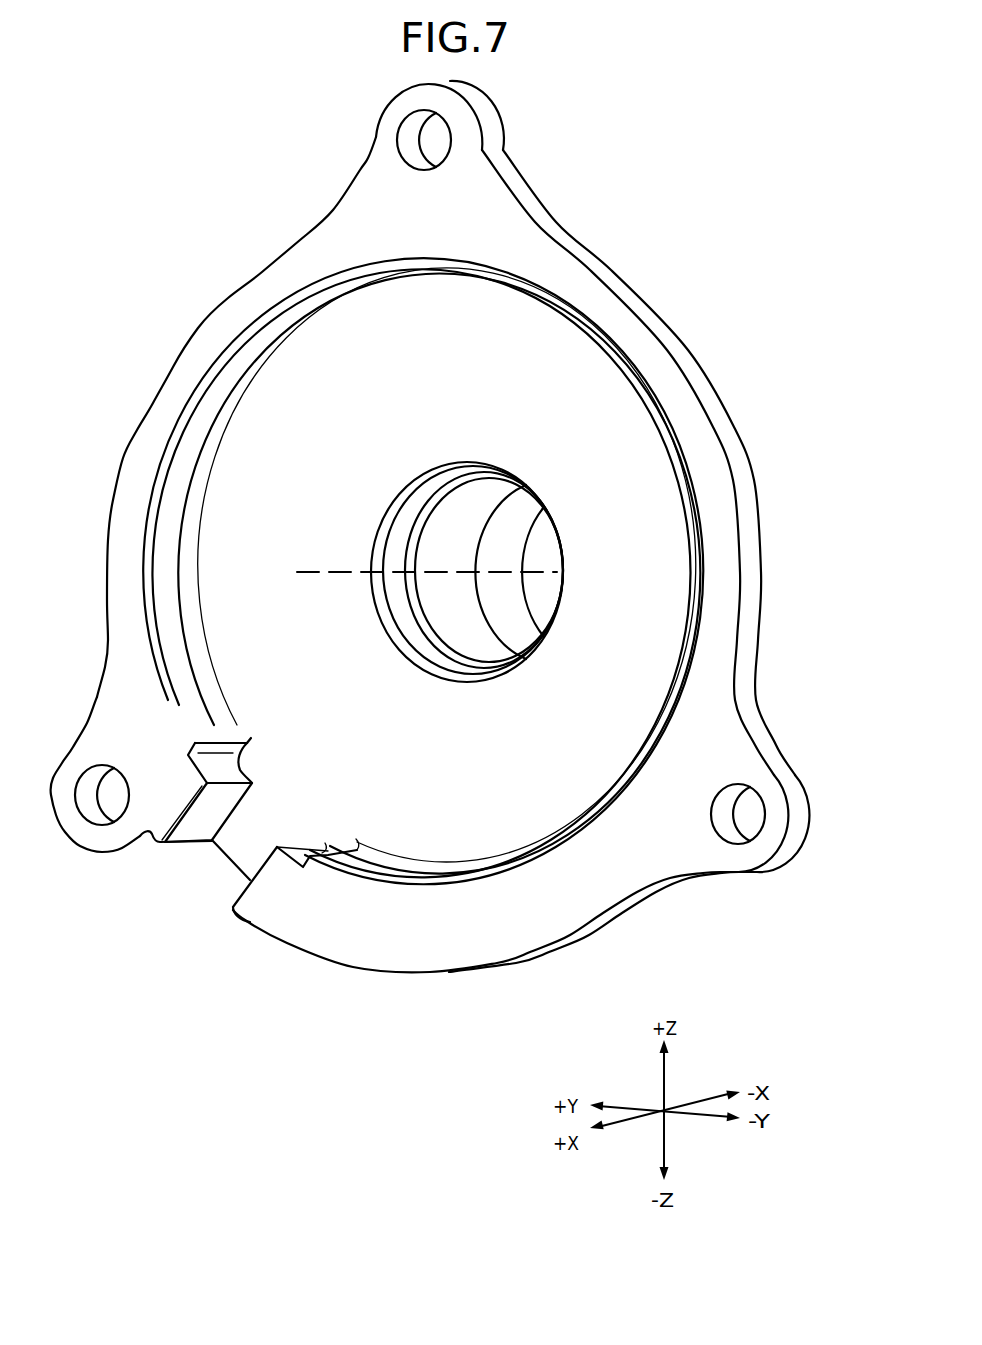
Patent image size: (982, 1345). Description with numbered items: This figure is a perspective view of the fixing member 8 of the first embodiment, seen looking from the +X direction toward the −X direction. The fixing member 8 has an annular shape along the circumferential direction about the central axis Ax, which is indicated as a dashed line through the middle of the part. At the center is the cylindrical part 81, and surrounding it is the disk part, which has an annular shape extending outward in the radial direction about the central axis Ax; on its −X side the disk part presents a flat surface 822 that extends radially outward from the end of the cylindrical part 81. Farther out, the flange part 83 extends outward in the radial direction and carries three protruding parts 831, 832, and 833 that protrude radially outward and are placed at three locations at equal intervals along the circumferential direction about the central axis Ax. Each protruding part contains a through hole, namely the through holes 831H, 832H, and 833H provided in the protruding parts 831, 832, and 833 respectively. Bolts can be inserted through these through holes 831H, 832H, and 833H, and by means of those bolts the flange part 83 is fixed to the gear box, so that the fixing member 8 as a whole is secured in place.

The fixing member 8 is at (737, 274).
The cylindrical part 81 is at (508, 610).
The flat surface 822 is at (307, 402).
The flange part 83 is at (703, 455).
The protruding part 831 is at (447, 200).
The through hole 831H is at (433, 135).
The protruding part 832 is at (732, 753).
The through hole 832H is at (748, 817).
The protruding part 833 is at (132, 827).
The through hole 833H is at (105, 797).
The central axis Ax is at (312, 572).